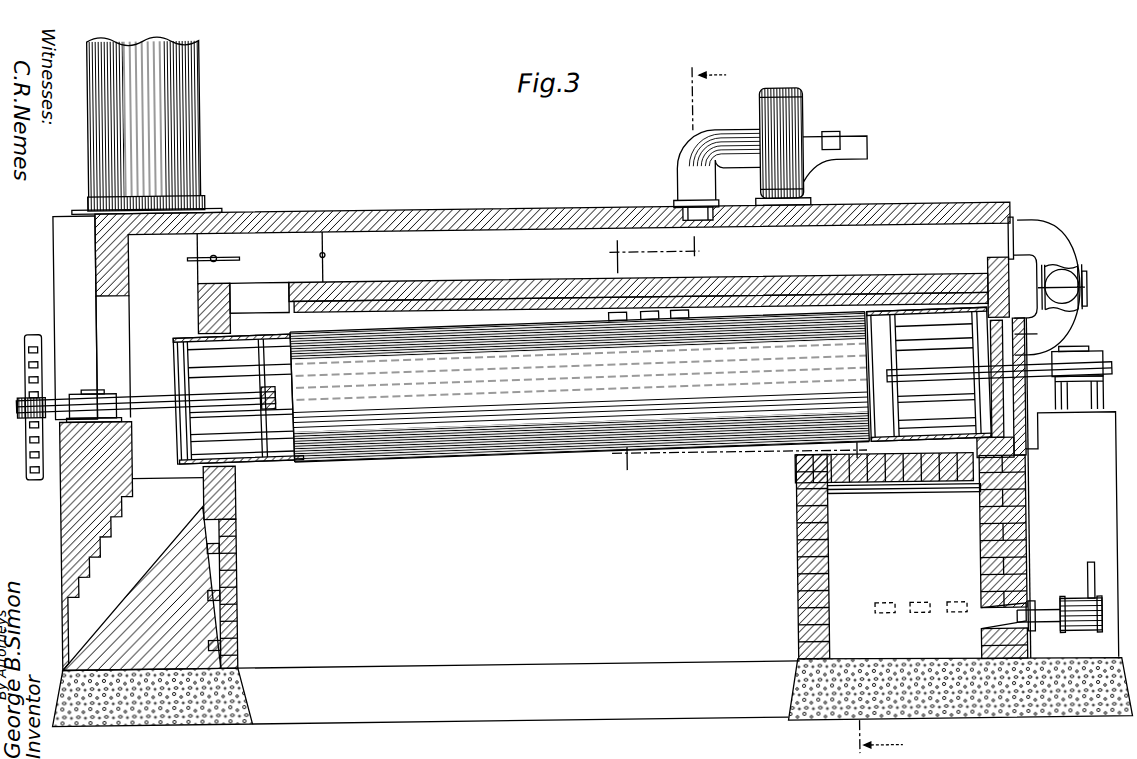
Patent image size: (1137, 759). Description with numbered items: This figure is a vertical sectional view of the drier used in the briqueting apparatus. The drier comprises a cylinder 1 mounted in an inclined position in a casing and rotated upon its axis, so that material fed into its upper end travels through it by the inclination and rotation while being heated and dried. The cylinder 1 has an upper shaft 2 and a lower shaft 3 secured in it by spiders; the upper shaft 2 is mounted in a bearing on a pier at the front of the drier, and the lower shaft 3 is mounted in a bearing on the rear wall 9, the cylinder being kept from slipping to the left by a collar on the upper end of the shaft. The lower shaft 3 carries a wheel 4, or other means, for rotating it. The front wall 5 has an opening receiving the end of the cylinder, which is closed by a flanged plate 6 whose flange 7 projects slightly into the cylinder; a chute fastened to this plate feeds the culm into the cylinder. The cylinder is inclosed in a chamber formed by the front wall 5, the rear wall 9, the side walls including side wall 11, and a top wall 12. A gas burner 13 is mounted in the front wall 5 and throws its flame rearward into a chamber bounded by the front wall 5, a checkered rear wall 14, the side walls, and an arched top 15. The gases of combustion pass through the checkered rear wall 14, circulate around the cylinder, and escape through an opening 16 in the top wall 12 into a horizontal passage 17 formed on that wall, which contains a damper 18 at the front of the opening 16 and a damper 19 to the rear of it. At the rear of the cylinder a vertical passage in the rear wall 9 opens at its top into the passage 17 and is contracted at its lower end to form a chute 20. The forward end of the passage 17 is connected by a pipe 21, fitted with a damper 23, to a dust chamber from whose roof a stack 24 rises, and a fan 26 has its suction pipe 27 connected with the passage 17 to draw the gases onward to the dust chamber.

The cylinder 1 is at (612, 454).
The upper shaft 2 is at (888, 380).
The lower shaft 3 is at (282, 391).
The wheel 4 is at (739, 450).
The front wall 5 is at (1030, 557).
The flanged plate 6 is at (1036, 353).
The flange 7 is at (1043, 336).
The rear wall 9 is at (59, 505).
The side wall 11 is at (517, 605).
The top wall 12 is at (464, 287).
The gas burner 13 is at (1070, 637).
The rear wall (of flame chamber) 14 is at (796, 553).
The arched top 15 is at (892, 501).
The opening 16 is at (254, 288).
The horizontal passage 17 is at (545, 252).
The damper 18 is at (326, 249).
The damper 19 is at (197, 257).
The chute 20 is at (140, 545).
The pipe 21 is at (1041, 236).
The damper 23 is at (1068, 287).
The stack 24 is at (196, 132).
The fan 26 is at (790, 91).
The suction pipe 27 is at (726, 134).